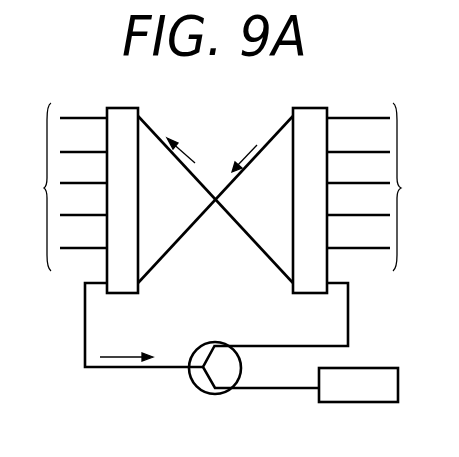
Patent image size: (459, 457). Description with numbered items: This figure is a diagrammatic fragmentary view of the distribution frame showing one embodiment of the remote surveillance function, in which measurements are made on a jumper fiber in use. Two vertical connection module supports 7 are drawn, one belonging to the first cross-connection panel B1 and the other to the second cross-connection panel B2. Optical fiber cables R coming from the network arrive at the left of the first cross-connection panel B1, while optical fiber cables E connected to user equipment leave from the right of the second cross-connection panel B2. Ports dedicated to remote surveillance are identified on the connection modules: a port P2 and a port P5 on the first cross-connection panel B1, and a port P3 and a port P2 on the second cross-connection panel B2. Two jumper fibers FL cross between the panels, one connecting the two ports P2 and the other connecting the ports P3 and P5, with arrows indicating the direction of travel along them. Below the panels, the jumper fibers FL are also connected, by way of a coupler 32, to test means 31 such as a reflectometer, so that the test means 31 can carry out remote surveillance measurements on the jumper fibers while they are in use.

The connection module support 7 is at (217, 181).
The first cross-connection panel B1 is at (122, 181).
The second cross-connection panel B2 is at (310, 181).
The jumper fiber FL is at (258, 253).
The port P2 is at (214, 200).
The port P3 is at (271, 107).
The port P5 is at (156, 294).
The optical fiber cable R is at (64, 187).
The optical fiber cable E is at (375, 187).
The coupler 32 is at (197, 379).
The test means 31 is at (398, 385).